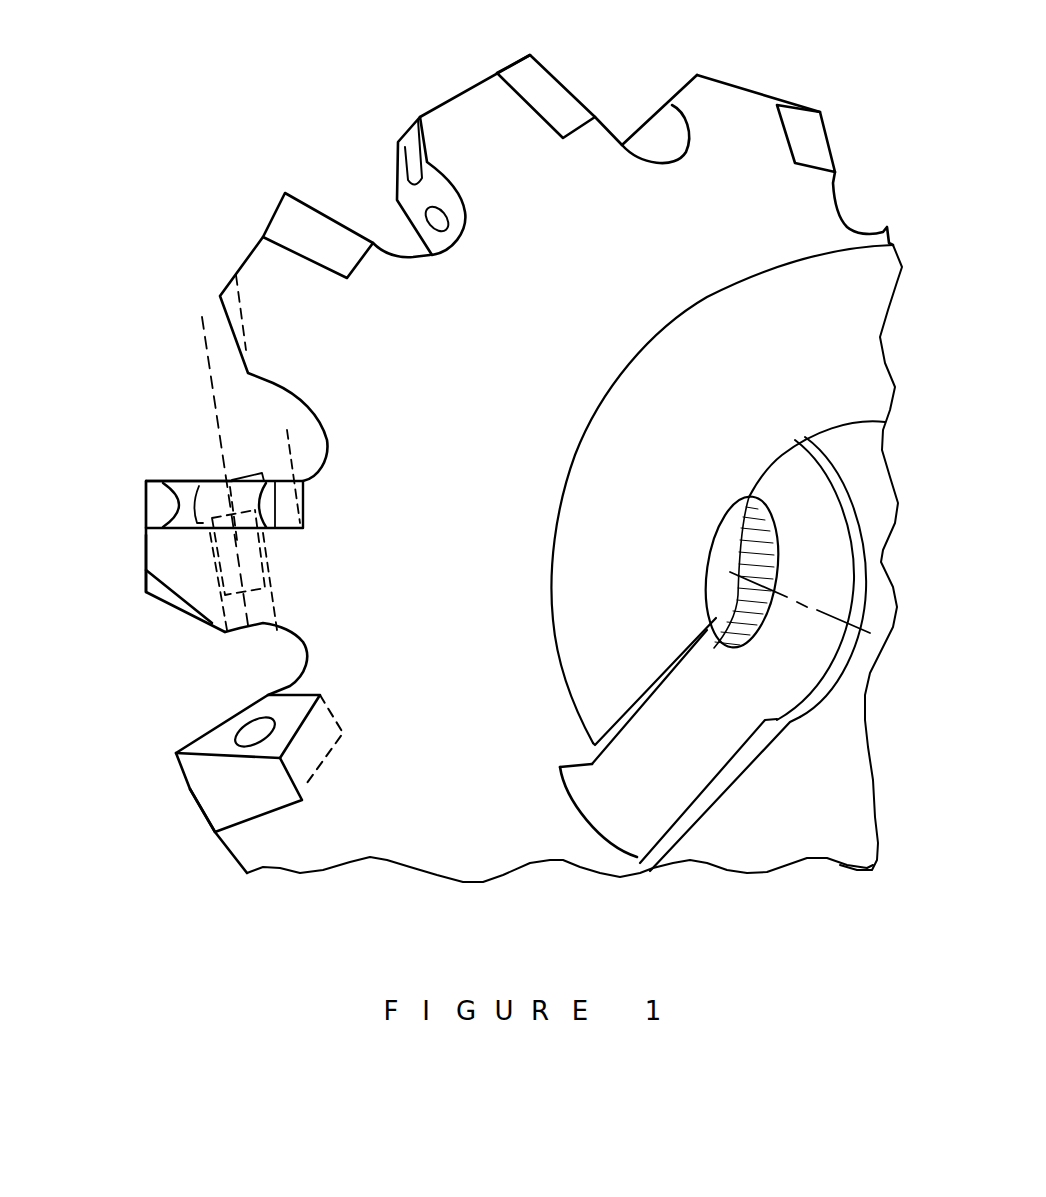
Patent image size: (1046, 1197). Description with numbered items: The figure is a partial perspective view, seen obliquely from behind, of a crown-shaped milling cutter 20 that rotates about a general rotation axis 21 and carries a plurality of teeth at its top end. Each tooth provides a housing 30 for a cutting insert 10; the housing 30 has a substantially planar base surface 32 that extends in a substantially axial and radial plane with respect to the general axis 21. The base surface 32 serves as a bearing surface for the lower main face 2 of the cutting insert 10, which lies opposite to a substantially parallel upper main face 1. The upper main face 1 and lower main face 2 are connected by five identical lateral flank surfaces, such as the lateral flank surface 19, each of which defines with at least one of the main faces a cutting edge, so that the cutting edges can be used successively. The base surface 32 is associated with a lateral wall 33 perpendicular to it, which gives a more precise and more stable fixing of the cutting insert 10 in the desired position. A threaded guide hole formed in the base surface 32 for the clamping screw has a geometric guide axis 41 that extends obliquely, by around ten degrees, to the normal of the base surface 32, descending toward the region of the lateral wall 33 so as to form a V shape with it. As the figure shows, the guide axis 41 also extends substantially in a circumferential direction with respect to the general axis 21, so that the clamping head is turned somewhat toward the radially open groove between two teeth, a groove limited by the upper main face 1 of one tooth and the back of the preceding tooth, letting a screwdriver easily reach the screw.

The upper main face 1 is at (157, 479).
The lower main face 2 is at (146, 500).
The cutting insert 10 is at (173, 500).
The lateral flank surface 19 is at (233, 471).
The milling cutter 20 is at (480, 687).
The general rotation axis 21 is at (817, 612).
The housing 30 is at (137, 510).
The base surface 32 is at (146, 543).
The lateral wall 33 is at (308, 514).
The guide axis 41 is at (203, 350).